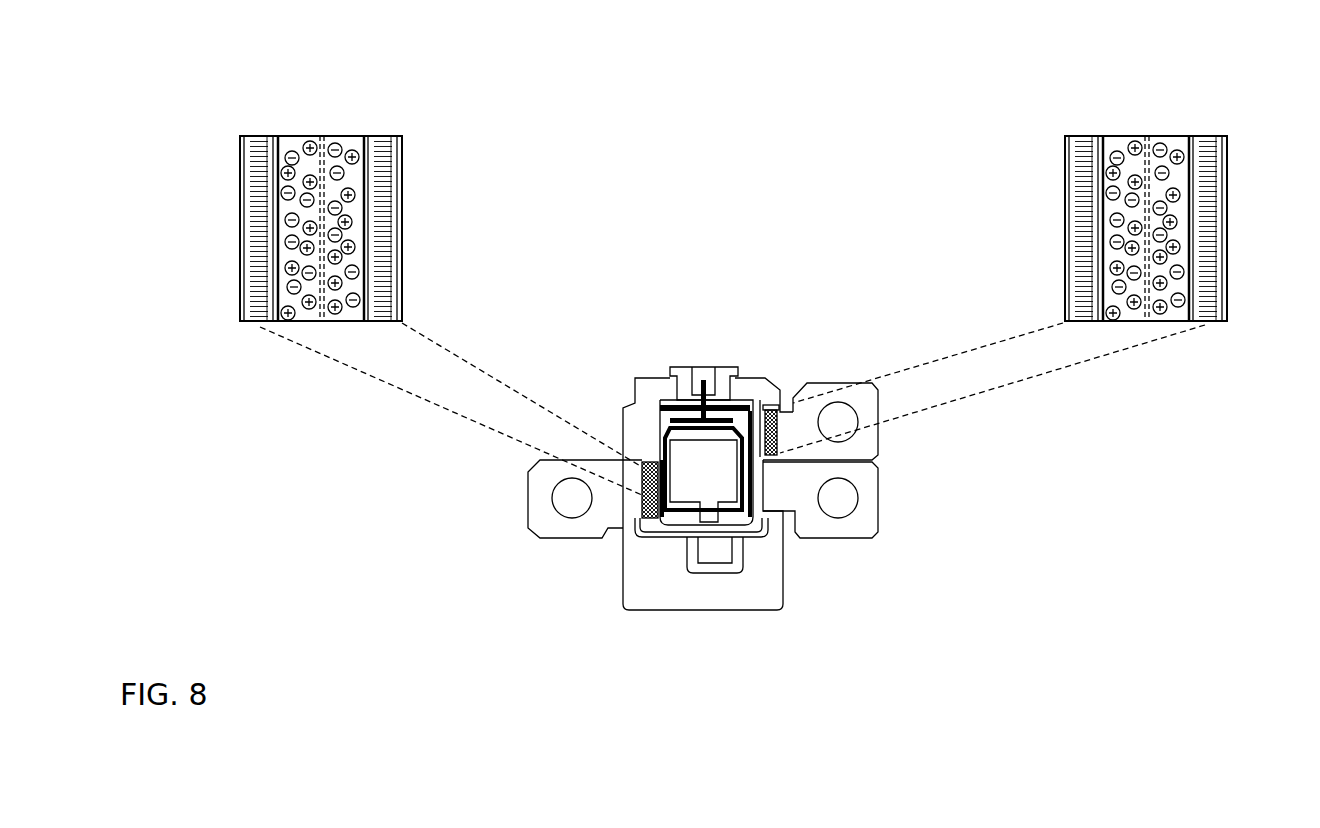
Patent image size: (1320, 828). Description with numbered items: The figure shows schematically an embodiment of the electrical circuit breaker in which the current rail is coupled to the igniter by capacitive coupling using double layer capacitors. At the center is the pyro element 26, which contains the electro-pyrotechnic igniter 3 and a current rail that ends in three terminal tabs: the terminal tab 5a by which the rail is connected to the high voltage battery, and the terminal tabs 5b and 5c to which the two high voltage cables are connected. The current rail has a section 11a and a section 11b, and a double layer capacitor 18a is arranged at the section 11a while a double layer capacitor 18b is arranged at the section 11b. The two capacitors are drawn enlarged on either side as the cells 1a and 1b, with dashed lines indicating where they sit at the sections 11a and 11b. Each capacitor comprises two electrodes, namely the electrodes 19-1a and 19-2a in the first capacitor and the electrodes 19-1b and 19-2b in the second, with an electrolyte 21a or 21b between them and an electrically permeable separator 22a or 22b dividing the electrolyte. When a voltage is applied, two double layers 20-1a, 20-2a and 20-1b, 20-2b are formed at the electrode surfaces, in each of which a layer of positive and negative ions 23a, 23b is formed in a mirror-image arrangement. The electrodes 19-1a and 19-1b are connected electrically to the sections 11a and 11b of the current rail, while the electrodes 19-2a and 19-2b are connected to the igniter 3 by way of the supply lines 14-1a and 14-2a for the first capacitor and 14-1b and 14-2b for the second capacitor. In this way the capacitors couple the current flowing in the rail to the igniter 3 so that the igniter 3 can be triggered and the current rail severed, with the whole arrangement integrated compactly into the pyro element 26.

The first battery cell 1a is at (314, 229).
The second battery cell 1b is at (1138, 229).
The electrode 19-1a is at (260, 238).
The electrode 19-2a is at (380, 225).
The electrode 19-1b is at (1086, 239).
The electrode 19-2b is at (1207, 226).
The double layer 20-1a is at (277, 312).
The double layer 20-2a is at (373, 320).
The double layer 20-1b is at (1098, 308).
The double layer 20-2b is at (1197, 317).
The electrolyte 21a is at (302, 320).
The electrolyte 21b is at (1126, 317).
The electrically permeable separator 22a is at (322, 330).
The electrically permeable separator 22b is at (1146, 327).
The layer of positive and negative ions 23a is at (342, 315).
The layer of positive and negative ions 23b is at (1163, 315).
The electro-pyrotechnic igniter 3 is at (703, 403).
The supply line 14-1a is at (660, 432).
The supply line 14-1b is at (737, 399).
The supply line 14-2a is at (737, 517).
The supply line 14-2b is at (675, 408).
The double layer capacitor 18a is at (647, 512).
The double layer capacitor 18b is at (772, 413).
The section of the current rail 11a is at (637, 488).
The section of the current rail 11b is at (795, 422).
The terminal tab 5a is at (542, 527).
The terminal tab 5b is at (858, 447).
The terminal tab 5c is at (858, 523).
The pyro element 26 is at (655, 592).